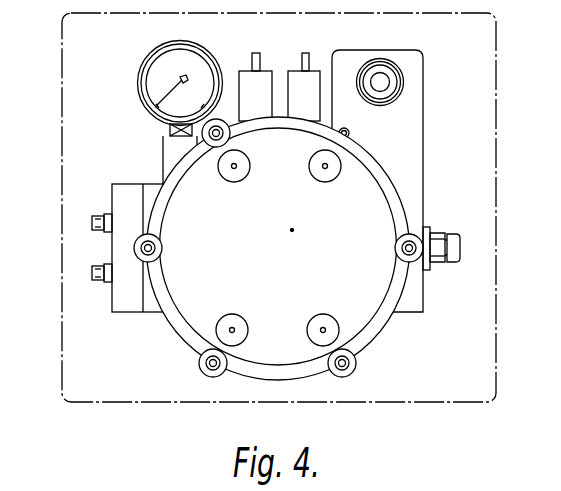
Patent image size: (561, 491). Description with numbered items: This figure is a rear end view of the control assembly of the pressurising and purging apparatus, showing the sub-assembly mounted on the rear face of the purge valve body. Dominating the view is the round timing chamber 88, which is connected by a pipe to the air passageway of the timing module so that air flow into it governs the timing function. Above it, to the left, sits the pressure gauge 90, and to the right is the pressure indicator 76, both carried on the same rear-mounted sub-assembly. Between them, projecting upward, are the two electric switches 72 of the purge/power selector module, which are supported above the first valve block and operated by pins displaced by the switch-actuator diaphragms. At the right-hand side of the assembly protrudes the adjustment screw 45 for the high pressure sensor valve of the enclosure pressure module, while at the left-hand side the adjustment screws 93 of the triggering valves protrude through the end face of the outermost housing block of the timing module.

The pressure gauge 90 is at (157, 65).
The electric switches 72 is at (297, 78).
The pressure indicator 76 is at (382, 76).
The timing chamber 88 is at (195, 322).
The adjustment screw 45 is at (452, 232).
The adjustment screws 93 is at (94, 224).